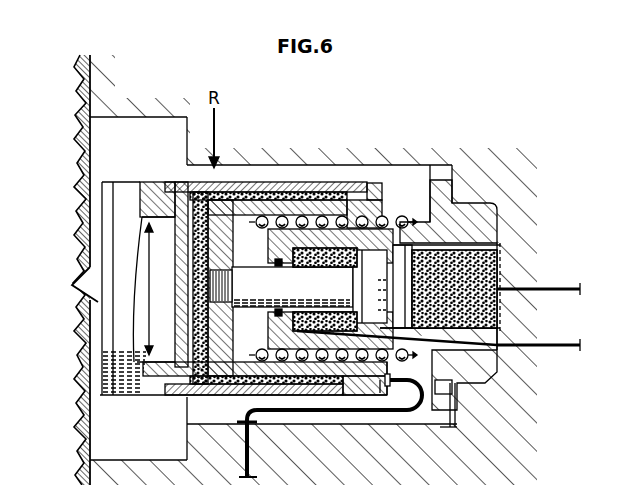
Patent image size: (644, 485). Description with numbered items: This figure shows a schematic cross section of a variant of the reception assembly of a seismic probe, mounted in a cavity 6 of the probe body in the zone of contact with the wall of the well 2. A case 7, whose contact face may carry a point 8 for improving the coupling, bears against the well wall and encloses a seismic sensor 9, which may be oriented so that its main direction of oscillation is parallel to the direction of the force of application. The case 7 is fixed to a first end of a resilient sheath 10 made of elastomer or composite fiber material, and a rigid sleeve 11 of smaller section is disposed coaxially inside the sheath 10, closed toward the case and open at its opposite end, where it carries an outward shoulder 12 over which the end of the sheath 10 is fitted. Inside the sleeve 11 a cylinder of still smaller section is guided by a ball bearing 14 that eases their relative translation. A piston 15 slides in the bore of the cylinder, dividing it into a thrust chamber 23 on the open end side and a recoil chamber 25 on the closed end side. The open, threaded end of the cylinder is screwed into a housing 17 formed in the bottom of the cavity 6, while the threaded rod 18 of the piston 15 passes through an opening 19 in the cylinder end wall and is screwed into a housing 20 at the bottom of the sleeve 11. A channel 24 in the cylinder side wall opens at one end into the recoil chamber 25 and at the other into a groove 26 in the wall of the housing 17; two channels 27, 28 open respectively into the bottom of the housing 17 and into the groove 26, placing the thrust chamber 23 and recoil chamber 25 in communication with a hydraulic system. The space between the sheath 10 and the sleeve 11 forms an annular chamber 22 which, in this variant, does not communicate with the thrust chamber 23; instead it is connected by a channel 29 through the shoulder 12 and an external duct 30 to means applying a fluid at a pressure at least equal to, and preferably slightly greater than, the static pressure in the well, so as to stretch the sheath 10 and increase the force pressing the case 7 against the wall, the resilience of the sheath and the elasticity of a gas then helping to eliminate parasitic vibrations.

The well 2 is at (84, 60).
The cavity 6 is at (130, 444).
The case 7 is at (121, 195).
The point 8 is at (72, 285).
The seismic sensor 9 is at (152, 222).
The sheath 10 is at (295, 190).
The rigid sleeve 11 is at (242, 213).
The shoulder 12 is at (371, 198).
The ball bearing 14 is at (402, 219).
The piston 15 is at (396, 262).
The housing 17 is at (478, 202).
The rod 18 is at (258, 282).
The opening 19 is at (266, 315).
The housing 20 is at (220, 302).
The annular chamber 22 is at (260, 195).
The thrust chamber 23 is at (480, 315).
The channel 24 is at (465, 383).
The recoil chamber 25 is at (332, 258).
The groove 26 is at (500, 350).
The channel 27 is at (543, 287).
The channel 28 is at (550, 348).
The channel 29 is at (380, 382).
The external duct 30 is at (405, 412).